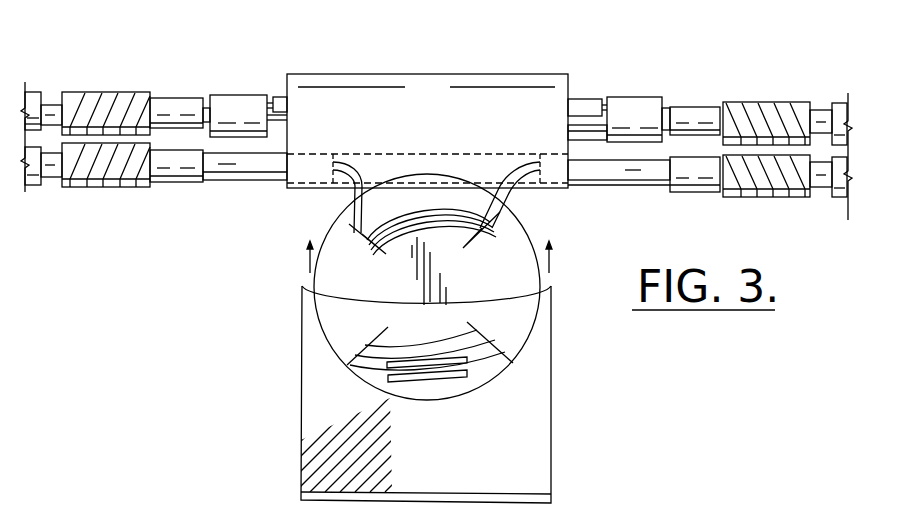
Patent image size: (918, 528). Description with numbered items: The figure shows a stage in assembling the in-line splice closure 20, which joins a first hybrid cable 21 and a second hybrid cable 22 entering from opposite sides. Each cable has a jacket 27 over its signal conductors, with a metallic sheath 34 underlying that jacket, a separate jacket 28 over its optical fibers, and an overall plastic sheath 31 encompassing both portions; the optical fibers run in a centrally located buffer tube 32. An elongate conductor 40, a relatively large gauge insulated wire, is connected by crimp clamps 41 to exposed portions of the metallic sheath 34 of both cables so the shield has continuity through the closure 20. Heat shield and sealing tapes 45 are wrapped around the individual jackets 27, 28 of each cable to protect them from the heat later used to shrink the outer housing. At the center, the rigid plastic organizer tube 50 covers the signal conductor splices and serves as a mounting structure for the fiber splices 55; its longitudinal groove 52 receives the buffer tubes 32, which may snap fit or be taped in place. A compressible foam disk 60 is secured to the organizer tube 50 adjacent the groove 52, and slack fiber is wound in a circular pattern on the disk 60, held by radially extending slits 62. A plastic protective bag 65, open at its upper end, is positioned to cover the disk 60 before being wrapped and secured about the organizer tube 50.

The splice closure 20 is at (514, 58).
The first hybrid cable 21 is at (836, 90).
The second hybrid cable 22 is at (46, 78).
The signal conductor jacket 27 is at (160, 98).
The optical fiber jacket 28 is at (176, 184).
The overall plastic jacket or sheath 31 is at (33, 186).
The buffer tube 32 is at (238, 182).
The metallic sheath 34 is at (207, 98).
The elongate conductor 40 is at (588, 98).
The crimp clamp 41 is at (240, 96).
The heat shield and sealing tape 45 is at (103, 92).
The organizer tube 50 is at (338, 70).
The groove 52 is at (507, 167).
The fiber splice 55 is at (410, 381).
The compressible foam disk 60 is at (315, 233).
The radially extending slit 62 is at (465, 243).
The protective bag 65 is at (553, 408).